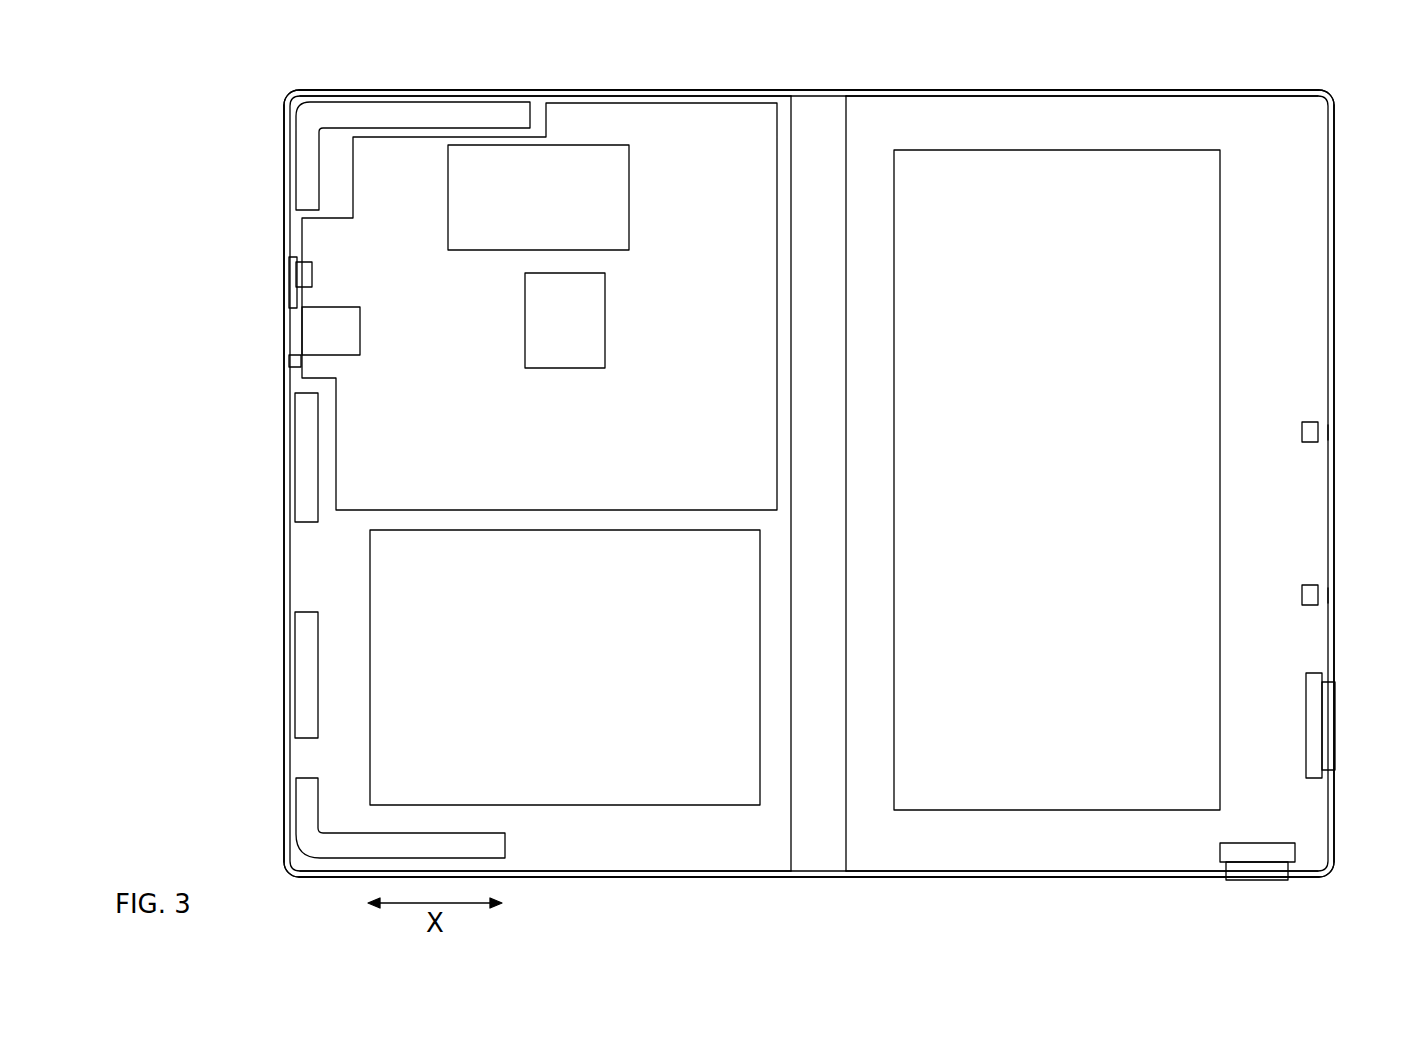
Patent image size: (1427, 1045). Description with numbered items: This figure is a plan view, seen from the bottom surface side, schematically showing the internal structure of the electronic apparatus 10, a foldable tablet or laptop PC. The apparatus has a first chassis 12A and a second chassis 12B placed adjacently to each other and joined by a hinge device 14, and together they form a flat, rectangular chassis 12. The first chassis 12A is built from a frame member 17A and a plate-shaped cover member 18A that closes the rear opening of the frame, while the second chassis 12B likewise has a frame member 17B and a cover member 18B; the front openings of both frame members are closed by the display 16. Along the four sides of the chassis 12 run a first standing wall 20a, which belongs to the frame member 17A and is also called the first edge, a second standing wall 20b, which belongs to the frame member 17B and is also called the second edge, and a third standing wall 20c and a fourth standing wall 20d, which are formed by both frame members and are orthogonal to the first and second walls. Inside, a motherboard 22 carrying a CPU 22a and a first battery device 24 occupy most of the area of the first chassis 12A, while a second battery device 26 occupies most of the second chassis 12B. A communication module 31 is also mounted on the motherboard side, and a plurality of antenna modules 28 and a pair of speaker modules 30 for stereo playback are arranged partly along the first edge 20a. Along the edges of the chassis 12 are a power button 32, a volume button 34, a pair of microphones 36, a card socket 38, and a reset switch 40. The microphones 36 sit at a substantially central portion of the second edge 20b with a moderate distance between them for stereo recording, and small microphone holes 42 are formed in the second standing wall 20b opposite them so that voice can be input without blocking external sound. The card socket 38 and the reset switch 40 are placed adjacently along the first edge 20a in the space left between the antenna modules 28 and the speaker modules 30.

The electronic apparatus 10 is at (211, 42).
The chassis 12 is at (446, 74).
The first chassis 12A is at (540, 483).
The second chassis 12B is at (1153, 72).
The hinge device 14 is at (826, 147).
The display 16 is at (1089, 421).
The frame member 17A is at (550, 90).
The frame member 17B is at (1065, 92).
The cover member 18A is at (566, 828).
The cover member 18B is at (1052, 828).
The first standing wall 20a is at (285, 612).
The second standing wall 20b is at (1334, 232).
The third standing wall 20c is at (678, 877).
The fourth standing wall 20d is at (725, 90).
The motherboard 22 is at (676, 168).
The CPU 22a is at (606, 335).
The first battery device 24 is at (670, 787).
The second battery device 26 is at (1190, 233).
The antenna module 28 is at (295, 492).
The speaker module 30 is at (342, 115).
The communication module 31 is at (630, 220).
The power button 32 is at (1262, 852).
The volume button 34 is at (1315, 720).
The microphone 36 is at (1310, 420).
The card socket 38 is at (350, 307).
The reset switch 40 is at (312, 270).
The microphone hole 42 is at (1335, 440).